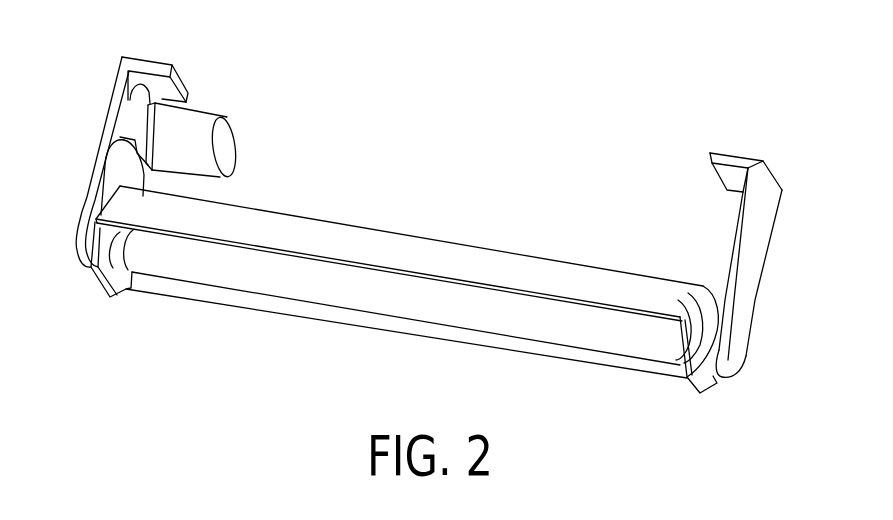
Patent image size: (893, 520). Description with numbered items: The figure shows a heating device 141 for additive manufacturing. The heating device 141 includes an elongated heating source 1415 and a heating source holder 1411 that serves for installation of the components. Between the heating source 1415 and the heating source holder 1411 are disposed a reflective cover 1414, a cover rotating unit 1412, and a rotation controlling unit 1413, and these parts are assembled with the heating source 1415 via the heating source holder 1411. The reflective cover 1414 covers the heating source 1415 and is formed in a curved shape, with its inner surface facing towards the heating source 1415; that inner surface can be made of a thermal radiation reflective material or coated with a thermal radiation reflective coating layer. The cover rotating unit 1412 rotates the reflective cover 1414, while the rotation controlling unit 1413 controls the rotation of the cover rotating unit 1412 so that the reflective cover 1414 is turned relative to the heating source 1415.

The heating device 141 is at (683, 42).
The heating source holder 1411 is at (190, 73).
The cover rotating unit 1412 is at (128, 303).
The rotation controlling unit 1413 is at (190, 137).
The reflective cover 1414 is at (570, 266).
The heating source 1415 is at (397, 286).